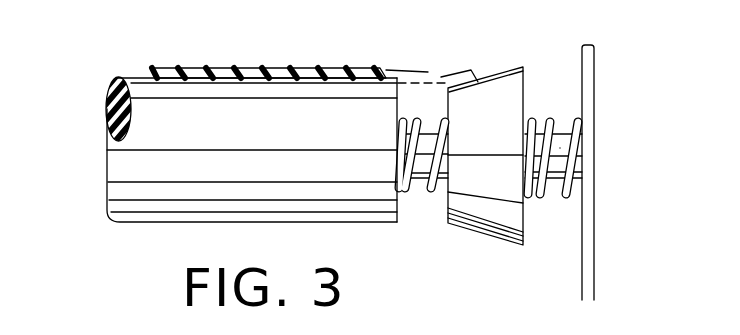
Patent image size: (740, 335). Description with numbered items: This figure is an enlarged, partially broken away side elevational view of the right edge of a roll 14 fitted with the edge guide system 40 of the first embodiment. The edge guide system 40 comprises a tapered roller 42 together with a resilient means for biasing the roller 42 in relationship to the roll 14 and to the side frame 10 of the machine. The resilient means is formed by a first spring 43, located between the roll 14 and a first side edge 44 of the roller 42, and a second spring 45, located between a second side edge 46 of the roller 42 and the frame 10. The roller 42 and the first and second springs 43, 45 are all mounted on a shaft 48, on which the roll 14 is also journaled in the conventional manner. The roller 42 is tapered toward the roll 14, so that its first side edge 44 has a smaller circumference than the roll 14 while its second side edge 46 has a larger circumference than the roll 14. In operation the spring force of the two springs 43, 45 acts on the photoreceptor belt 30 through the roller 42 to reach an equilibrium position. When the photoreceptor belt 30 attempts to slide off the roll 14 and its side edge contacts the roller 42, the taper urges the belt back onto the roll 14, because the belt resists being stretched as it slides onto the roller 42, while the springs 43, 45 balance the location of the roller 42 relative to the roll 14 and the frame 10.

The side frame 10 is at (588, 235).
The roll 14 is at (157, 180).
The photoreceptor belt 30 is at (220, 68).
The edge guide system 40 is at (545, 62).
The tapered roller 42 is at (477, 215).
The first spring 43 is at (428, 197).
The first side edge 44 is at (447, 87).
The second spring 45 is at (563, 197).
The second side edge 46 is at (513, 70).
The shaft 48 is at (560, 148).